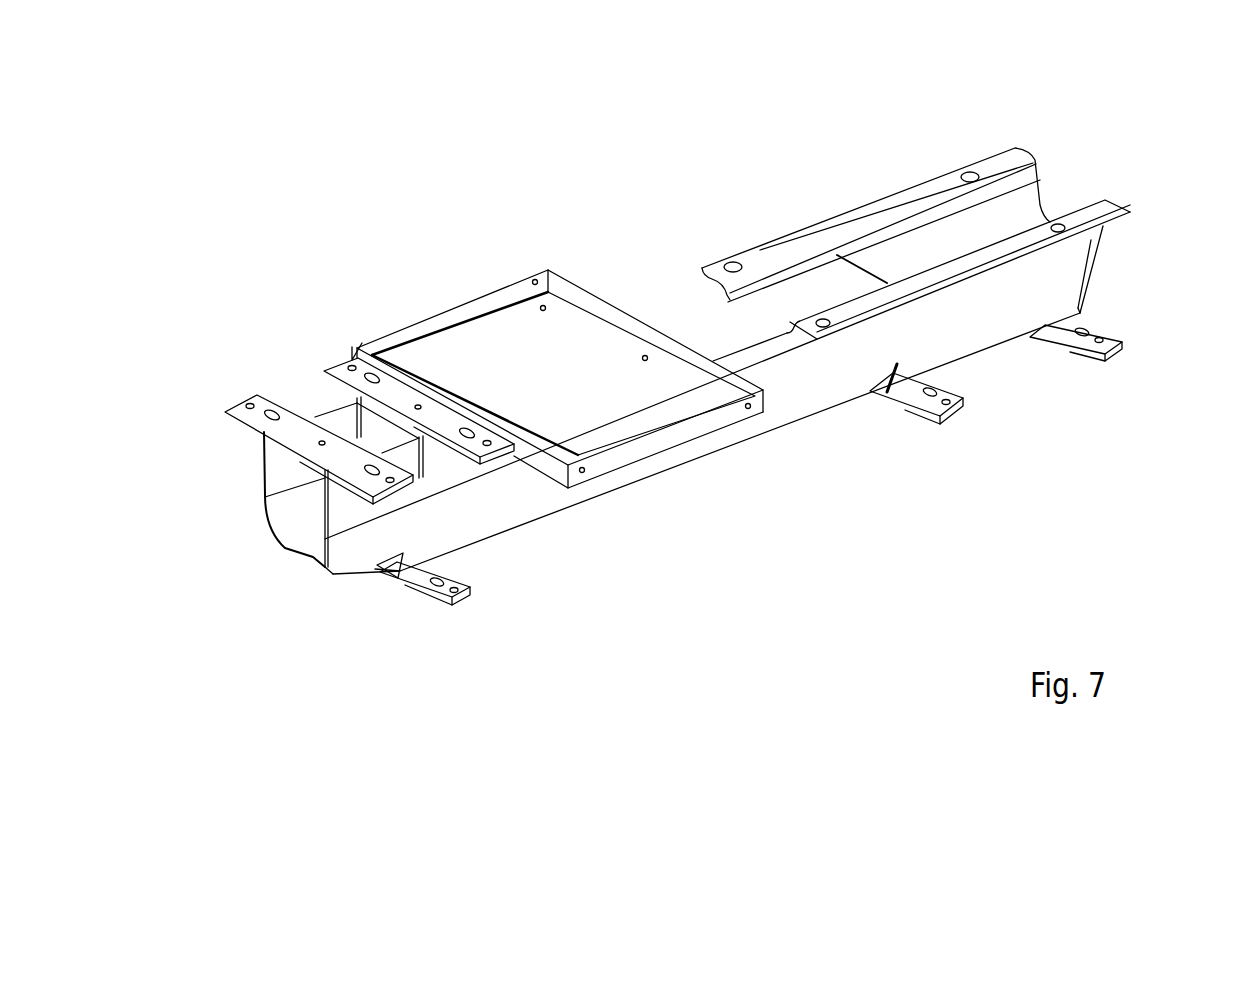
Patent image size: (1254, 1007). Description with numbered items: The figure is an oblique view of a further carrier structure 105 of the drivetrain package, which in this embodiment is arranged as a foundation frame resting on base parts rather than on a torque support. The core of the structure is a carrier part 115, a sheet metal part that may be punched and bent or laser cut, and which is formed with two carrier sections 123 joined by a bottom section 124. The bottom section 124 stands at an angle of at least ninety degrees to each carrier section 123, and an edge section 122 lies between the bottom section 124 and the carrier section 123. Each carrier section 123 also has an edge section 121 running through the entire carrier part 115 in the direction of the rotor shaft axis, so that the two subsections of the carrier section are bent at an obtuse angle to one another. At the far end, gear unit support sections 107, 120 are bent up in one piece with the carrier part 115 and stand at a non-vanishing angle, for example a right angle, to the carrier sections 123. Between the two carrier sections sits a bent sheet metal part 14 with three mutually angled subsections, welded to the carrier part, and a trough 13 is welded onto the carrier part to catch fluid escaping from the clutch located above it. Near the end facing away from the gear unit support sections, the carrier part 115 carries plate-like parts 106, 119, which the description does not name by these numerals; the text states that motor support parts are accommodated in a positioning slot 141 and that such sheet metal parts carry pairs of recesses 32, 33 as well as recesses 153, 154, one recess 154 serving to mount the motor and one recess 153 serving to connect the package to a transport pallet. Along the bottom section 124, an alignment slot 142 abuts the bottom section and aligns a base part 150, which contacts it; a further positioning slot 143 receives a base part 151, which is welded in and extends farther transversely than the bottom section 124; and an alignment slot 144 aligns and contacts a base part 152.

The trough 13 is at (482, 343).
The sheet metal part 14 is at (829, 216).
The recess 32 is at (270, 420).
The recess 33 is at (245, 400).
The carrier structure 105 is at (737, 470).
The mounting plate 106 is at (250, 415).
The gear unit support section 107 is at (1013, 362).
The carrier part 115 is at (826, 383).
The mounting plate 119 is at (395, 390).
The gear unit support section 120 is at (843, 225).
The edge section 121 is at (1085, 248).
The edge section 122 is at (783, 434).
The carrier section 123 is at (313, 553).
The bottom section 124 is at (380, 573).
The positioning slot 141 is at (269, 424).
The alignment slot 142 is at (395, 572).
The further positioning slot 143 is at (888, 392).
The alignment slot 144 is at (1095, 297).
The base part 150 is at (499, 645).
The base part 151 is at (937, 397).
The base part 152 is at (1087, 340).
The recess 153 is at (458, 600).
The recess 154 is at (436, 592).